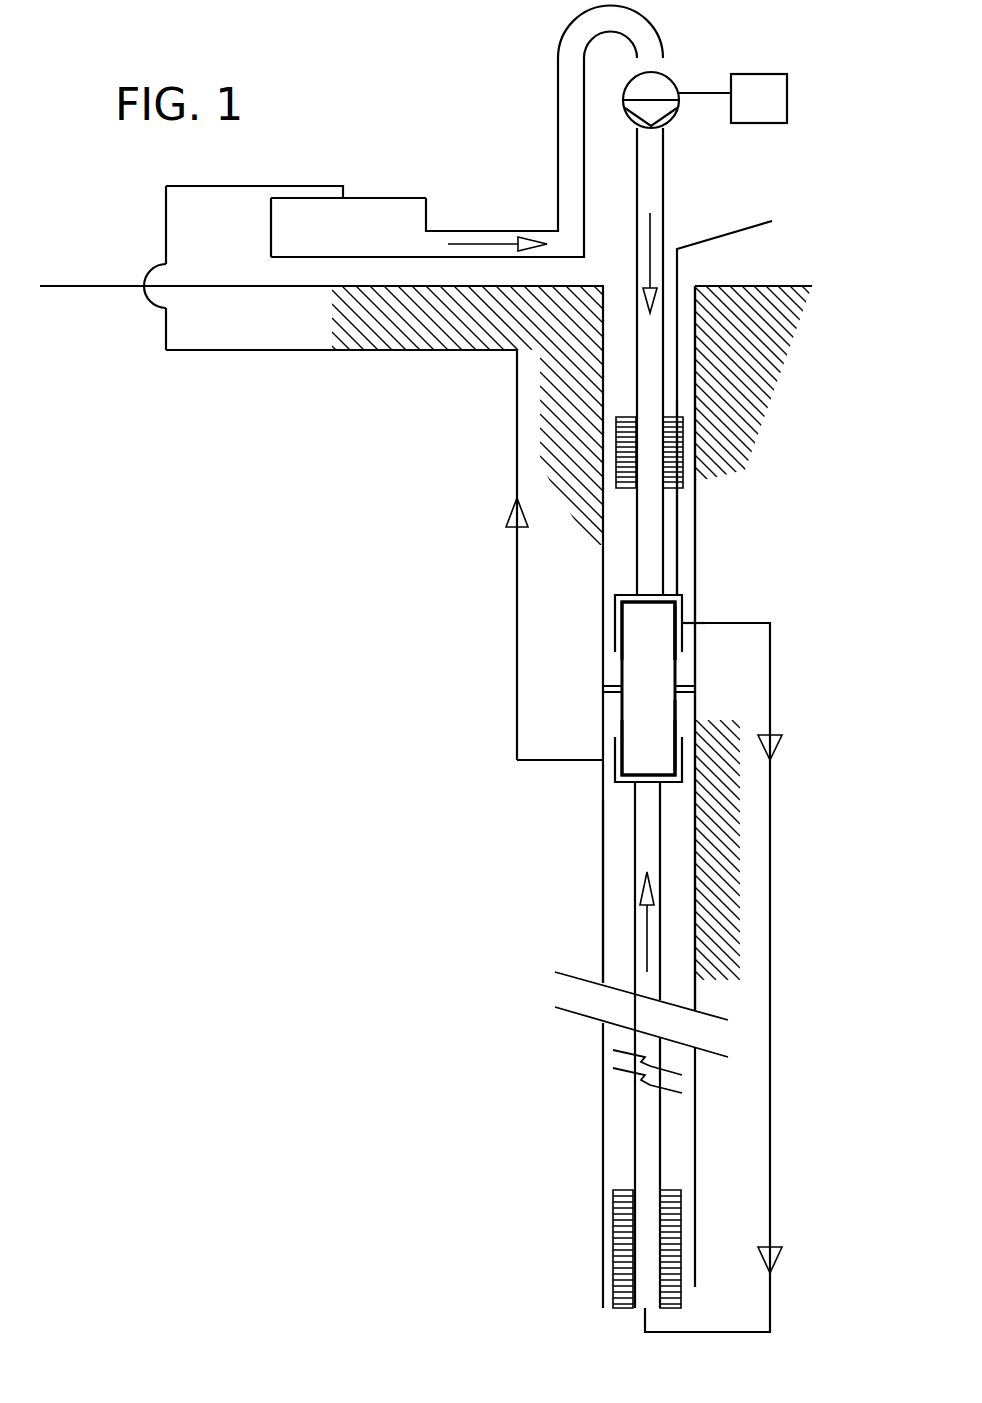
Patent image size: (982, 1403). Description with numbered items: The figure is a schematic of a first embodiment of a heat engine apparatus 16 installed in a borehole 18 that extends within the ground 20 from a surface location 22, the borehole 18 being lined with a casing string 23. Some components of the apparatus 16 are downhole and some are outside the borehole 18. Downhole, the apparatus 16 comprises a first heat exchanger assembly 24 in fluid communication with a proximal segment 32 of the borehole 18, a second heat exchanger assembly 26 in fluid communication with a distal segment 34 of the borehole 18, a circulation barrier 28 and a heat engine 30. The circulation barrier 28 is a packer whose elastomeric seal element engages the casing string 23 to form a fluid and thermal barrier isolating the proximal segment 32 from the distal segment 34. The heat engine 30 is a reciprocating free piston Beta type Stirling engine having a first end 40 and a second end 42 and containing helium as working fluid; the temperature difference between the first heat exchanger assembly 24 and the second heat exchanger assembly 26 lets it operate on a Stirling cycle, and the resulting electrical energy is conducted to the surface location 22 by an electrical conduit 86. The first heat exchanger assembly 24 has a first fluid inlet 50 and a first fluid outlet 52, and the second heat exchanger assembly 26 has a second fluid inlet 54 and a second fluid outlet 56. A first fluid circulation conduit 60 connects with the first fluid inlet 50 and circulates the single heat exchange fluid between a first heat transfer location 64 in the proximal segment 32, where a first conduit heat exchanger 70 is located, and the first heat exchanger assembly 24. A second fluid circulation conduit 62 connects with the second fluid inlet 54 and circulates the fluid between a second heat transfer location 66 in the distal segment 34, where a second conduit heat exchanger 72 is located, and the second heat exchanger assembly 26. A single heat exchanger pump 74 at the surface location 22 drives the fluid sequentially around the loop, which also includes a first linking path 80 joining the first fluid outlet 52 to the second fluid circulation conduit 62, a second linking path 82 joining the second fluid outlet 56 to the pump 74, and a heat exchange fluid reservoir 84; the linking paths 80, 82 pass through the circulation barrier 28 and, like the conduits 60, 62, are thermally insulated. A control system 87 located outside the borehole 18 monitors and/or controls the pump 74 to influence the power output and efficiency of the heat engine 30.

The heat engine apparatus 16 is at (461, 152).
The borehole 18 is at (613, 1122).
The ground 20 is at (426, 490).
The surface location 22 is at (785, 285).
The casing string 23 is at (697, 358).
The first heat exchanger assembly 24 is at (637, 627).
The second heat exchanger assembly 26 is at (643, 755).
The circulation barrier 28 is at (603, 690).
The heat engine 30 is at (637, 670).
The proximal segment 32 is at (682, 525).
The distal segment 34 is at (613, 942).
The first end 40 is at (658, 643).
The second end 42 is at (658, 722).
The first fluid inlet 50 is at (648, 593).
The first fluid outlet 52 is at (687, 620).
The second fluid inlet 54 is at (647, 783).
The second fluid outlet 56 is at (610, 765).
The first fluid circulation conduit 60 is at (657, 160).
The second fluid circulation conduit 62 is at (643, 857).
The first heat transfer location 64 is at (648, 468).
The second heat transfer location 66 is at (647, 1228).
The first conduit heat exchanger 70 is at (683, 452).
The second conduit heat exchanger 72 is at (613, 1273).
The single heat exchanger pump 74 is at (675, 72).
The first linking path 80 is at (740, 622).
The second linking path 82 is at (516, 684).
The heat exchange fluid reservoir 84 is at (348, 227).
The electrical conduit 86 is at (735, 228).
The control system 87 is at (733, 98).